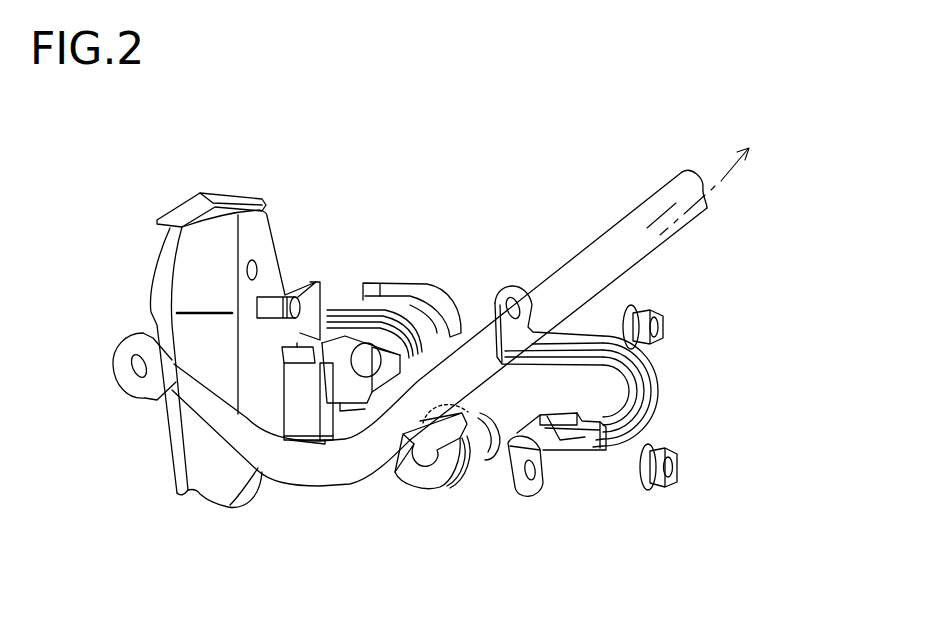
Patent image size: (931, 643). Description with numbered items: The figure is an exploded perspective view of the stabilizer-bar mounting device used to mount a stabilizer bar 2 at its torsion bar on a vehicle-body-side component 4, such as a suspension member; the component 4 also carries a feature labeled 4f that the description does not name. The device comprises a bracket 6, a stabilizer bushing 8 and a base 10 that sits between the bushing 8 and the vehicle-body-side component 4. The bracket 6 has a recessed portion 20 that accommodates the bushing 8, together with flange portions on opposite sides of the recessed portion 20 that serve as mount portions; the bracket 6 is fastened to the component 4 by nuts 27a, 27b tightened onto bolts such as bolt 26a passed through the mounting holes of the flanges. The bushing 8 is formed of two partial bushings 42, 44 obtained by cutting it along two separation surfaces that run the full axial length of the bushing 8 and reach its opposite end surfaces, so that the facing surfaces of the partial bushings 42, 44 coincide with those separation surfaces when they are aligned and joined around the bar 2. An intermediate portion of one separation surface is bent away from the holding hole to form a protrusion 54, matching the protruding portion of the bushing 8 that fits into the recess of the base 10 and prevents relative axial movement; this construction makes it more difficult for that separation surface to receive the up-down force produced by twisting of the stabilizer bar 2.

The stabilizer bar 2 is at (658, 198).
The vehicle-body-side component 4 is at (194, 272).
The pin 4f is at (266, 275).
The bracket 6 is at (652, 373).
The stabilizer bushing 8 is at (486, 472).
The base 10 is at (292, 400).
The recessed portion 20 is at (582, 455).
The bolt 26a is at (262, 308).
The nut 27a is at (656, 302).
The nut 27b is at (654, 490).
The partial bushing 42 is at (427, 500).
The partial bushing 44 is at (385, 302).
The protrusion 54 is at (446, 416).